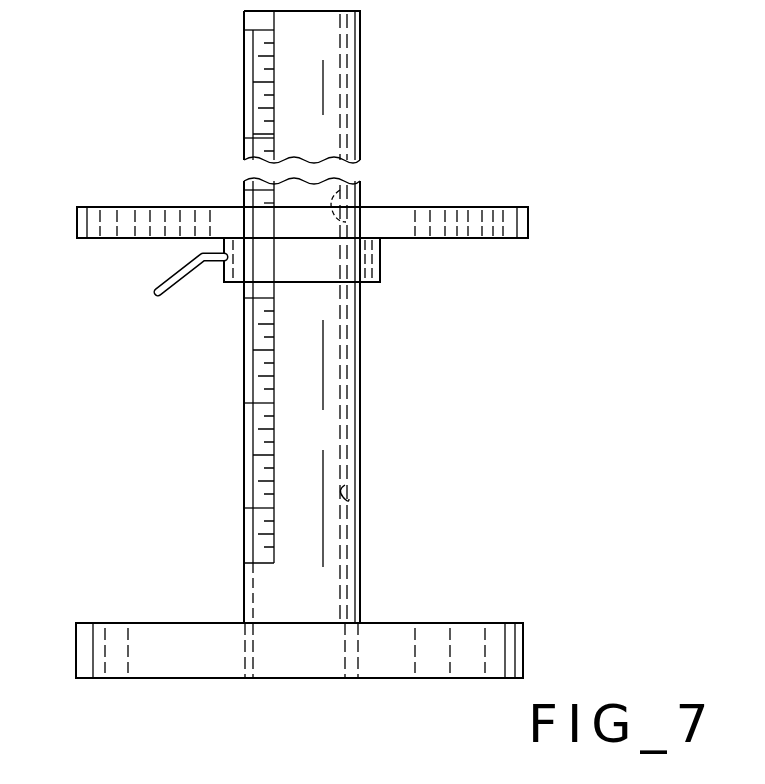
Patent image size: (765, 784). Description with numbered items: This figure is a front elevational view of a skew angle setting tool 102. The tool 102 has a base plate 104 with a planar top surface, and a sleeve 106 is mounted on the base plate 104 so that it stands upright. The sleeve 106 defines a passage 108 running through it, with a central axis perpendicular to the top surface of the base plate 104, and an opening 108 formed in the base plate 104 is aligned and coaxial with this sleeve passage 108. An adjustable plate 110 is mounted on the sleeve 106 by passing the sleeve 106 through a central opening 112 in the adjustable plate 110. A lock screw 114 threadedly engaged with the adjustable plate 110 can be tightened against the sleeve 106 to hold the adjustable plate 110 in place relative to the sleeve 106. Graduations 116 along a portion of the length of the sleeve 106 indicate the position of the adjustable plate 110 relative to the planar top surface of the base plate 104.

The skew angle setting tool 102 is at (136, 682).
The base plate 104 is at (455, 621).
The sleeve 106 is at (361, 548).
The passage 108 is at (363, 483).
The adjustable plate 110 is at (400, 228).
The central opening 112 is at (370, 185).
The lock screw 114 is at (183, 285).
The graduations 116 is at (244, 88).